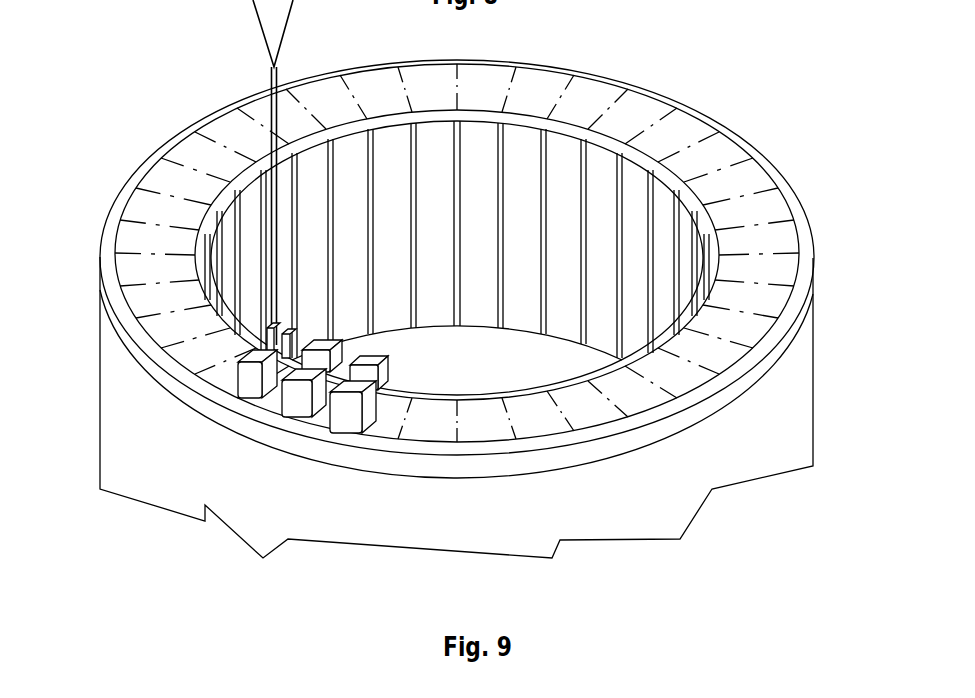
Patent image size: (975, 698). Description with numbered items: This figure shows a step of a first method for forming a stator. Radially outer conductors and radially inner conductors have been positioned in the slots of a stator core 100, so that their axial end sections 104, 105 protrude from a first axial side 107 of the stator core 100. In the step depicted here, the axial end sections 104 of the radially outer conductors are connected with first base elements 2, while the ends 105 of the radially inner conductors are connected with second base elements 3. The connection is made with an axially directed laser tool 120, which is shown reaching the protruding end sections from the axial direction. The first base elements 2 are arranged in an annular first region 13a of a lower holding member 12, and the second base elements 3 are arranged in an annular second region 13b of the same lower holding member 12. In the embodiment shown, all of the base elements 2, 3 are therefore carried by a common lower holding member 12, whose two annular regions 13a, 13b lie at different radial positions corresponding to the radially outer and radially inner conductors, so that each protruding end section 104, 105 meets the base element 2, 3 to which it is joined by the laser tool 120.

The first base elements 2 is at (248, 380).
The second base elements 3 is at (372, 374).
The lower holding member 12 is at (735, 170).
The annular first region 13a is at (642, 104).
The annular second region 13b is at (612, 128).
The stator core 100 is at (788, 398).
The axial end sections 104 is at (267, 360).
The ends 105 is at (364, 390).
The first axial side 107 is at (822, 255).
The laser tool 120 is at (270, 17).